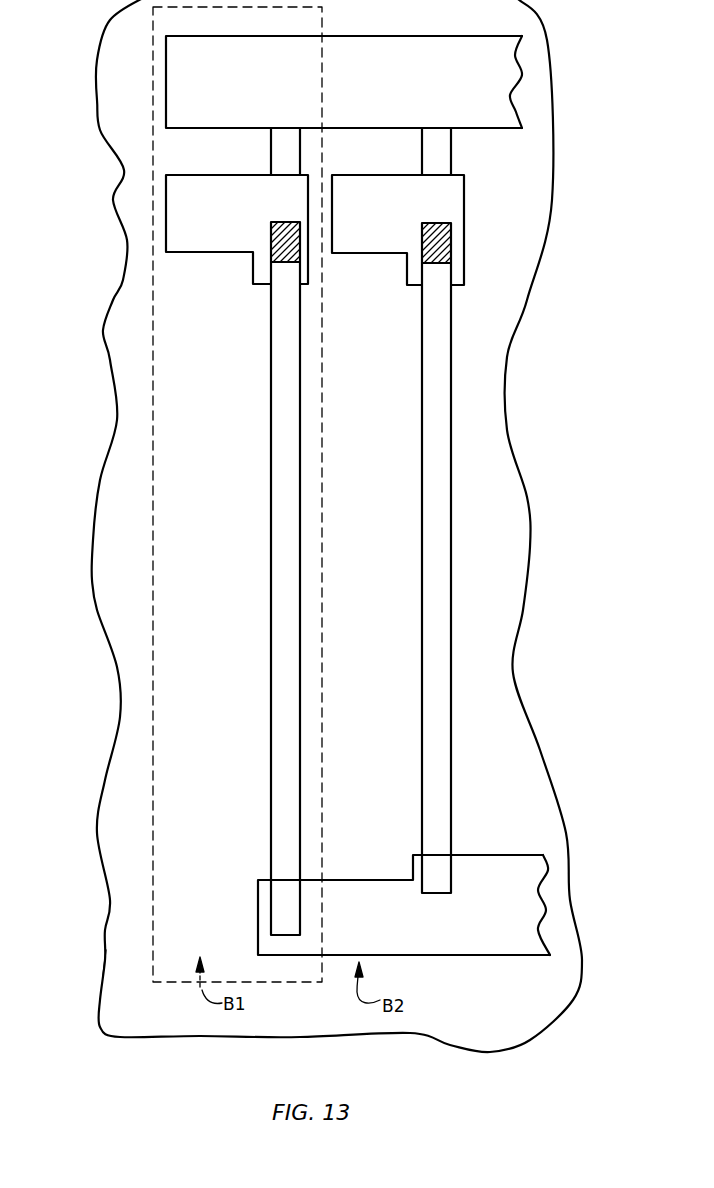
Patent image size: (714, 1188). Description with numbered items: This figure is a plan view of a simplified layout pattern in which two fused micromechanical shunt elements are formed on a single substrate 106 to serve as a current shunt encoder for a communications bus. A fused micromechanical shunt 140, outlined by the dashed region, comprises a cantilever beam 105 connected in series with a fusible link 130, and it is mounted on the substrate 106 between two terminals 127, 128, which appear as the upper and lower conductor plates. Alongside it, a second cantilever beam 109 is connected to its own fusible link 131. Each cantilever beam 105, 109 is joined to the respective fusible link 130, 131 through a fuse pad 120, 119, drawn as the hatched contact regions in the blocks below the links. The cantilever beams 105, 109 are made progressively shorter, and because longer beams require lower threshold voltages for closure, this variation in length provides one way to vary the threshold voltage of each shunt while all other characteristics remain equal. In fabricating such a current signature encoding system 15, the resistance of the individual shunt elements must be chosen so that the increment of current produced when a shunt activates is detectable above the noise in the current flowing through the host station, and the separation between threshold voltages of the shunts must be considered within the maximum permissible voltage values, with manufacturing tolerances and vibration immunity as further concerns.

The current signature encoding system 15 is at (513, 361).
The cantilever beam 105 is at (288, 562).
The substrate 106 is at (127, 958).
The cantilever beam 109 is at (432, 501).
The fuse pad 119 is at (461, 257).
The fuse pad 120 is at (185, 238).
The terminal 127 is at (374, 52).
The terminal 128 is at (482, 941).
The fusible link 130 is at (284, 144).
The fusible link 131 is at (435, 158).
The fused micromechanical shunt 140 is at (186, 983).